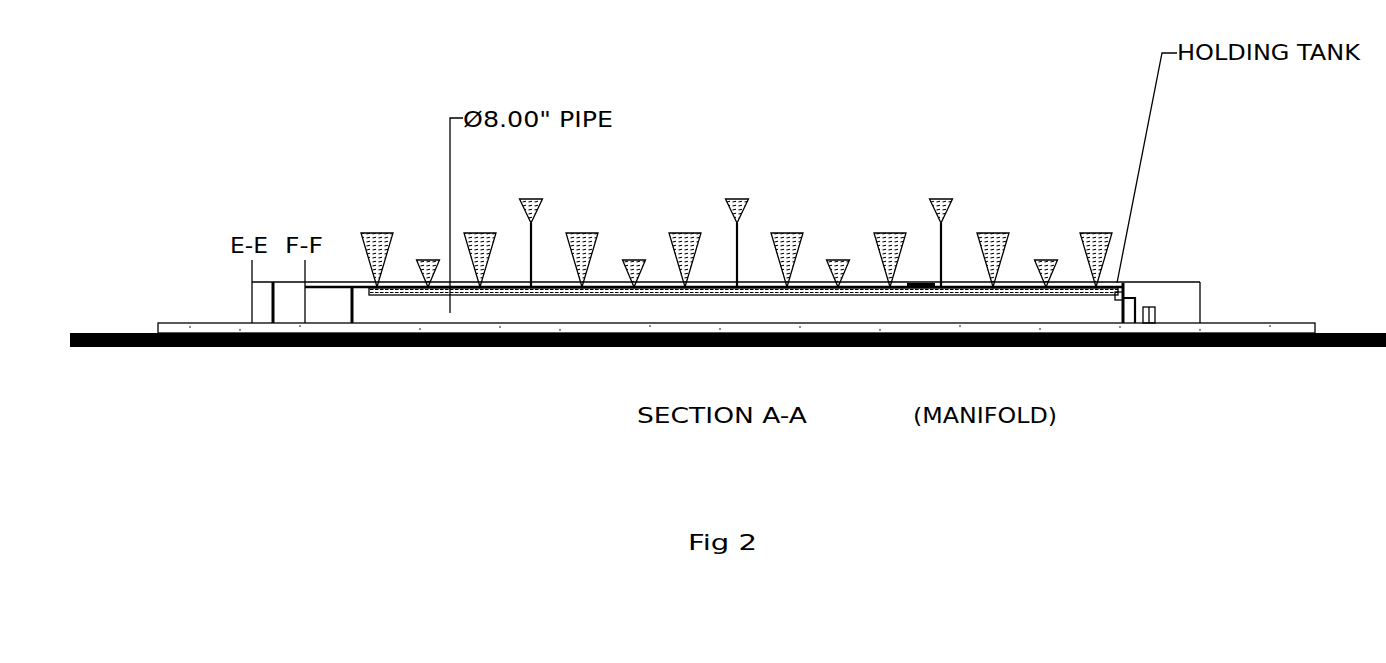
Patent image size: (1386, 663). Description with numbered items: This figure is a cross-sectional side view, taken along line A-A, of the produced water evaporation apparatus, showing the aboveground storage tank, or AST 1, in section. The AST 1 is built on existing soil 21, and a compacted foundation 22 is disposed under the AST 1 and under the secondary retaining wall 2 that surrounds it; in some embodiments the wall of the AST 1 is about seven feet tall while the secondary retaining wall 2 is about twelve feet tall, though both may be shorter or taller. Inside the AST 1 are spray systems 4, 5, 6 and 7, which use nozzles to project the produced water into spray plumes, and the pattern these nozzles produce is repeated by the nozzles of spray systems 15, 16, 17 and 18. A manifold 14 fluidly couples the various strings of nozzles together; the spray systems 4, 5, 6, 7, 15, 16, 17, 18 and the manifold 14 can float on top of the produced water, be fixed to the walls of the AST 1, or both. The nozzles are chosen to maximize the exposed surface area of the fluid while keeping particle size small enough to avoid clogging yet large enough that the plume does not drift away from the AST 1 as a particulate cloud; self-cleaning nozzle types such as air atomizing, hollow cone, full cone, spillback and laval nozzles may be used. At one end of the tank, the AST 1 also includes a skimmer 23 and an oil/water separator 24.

The AST 1 is at (352, 300).
The secondary retaining wall 2 is at (273, 300).
The spray system 4 is at (364, 224).
The spray system 5 is at (416, 224).
The spray system 6 is at (489, 224).
The spray system 7 is at (543, 224).
The manifold 14 is at (951, 339).
The spray system 15 is at (594, 224).
The spray system 16 is at (652, 224).
The spray system 17 is at (704, 224).
The spray system 18 is at (762, 224).
The existing soil 21 is at (709, 193).
The compacted foundation 22 is at (736, 218).
The skimmer 23 is at (1184, 212).
The oil/water separator 24 is at (1199, 251).